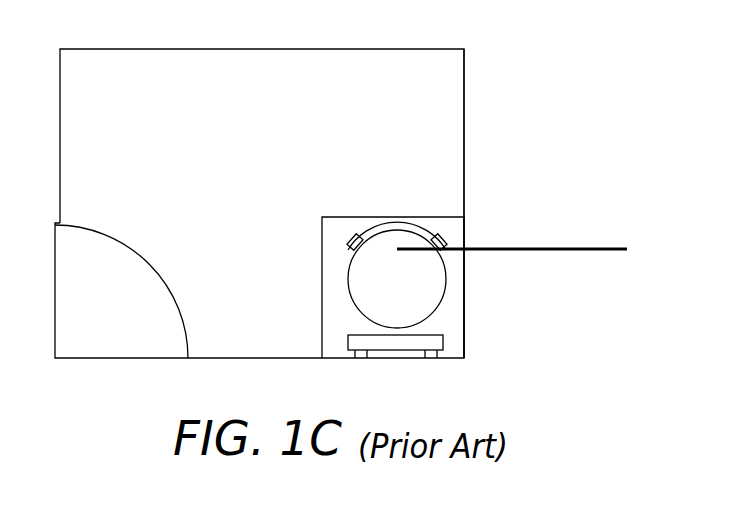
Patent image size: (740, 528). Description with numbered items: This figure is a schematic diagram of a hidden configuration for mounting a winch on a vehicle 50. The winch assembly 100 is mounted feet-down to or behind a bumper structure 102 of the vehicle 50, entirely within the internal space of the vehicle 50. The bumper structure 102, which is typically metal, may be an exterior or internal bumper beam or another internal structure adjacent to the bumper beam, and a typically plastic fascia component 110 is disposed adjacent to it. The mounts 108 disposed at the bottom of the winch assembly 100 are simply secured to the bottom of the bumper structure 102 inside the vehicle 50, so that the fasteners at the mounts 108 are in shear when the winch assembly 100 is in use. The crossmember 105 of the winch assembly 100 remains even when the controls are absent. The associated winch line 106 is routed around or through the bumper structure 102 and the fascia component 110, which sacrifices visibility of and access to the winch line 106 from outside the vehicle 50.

The vehicle 50 is at (345, 85).
The fascia component 110 is at (480, 132).
The winch assembly 100 is at (444, 221).
The bumper structure 102 is at (466, 322).
The crossmember 105 is at (397, 221).
The winch line 106 is at (572, 248).
The mounts 108 is at (351, 362).